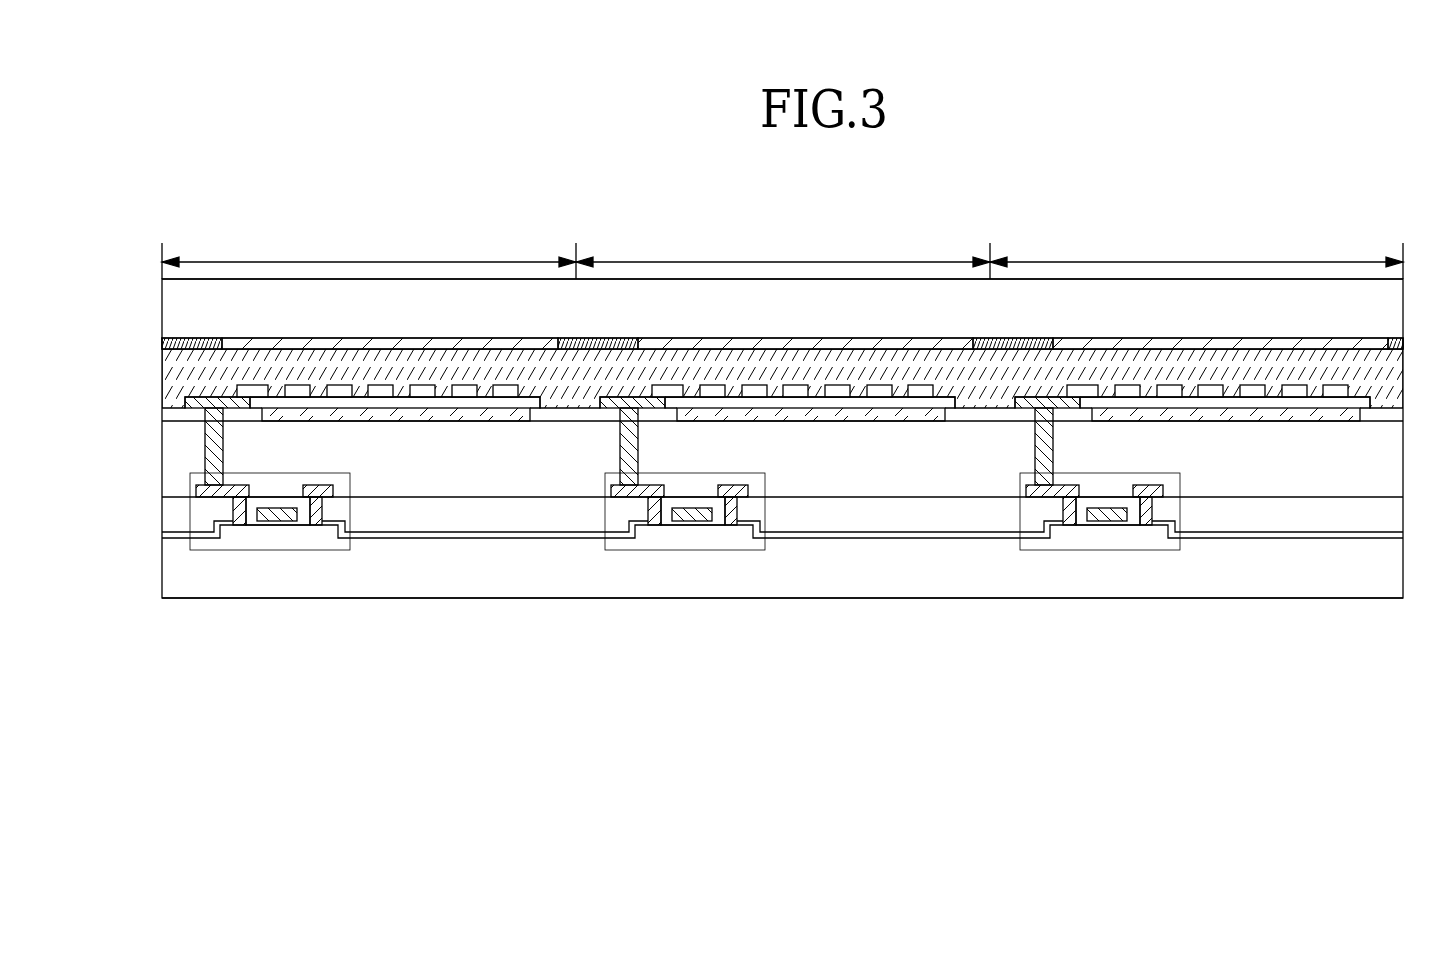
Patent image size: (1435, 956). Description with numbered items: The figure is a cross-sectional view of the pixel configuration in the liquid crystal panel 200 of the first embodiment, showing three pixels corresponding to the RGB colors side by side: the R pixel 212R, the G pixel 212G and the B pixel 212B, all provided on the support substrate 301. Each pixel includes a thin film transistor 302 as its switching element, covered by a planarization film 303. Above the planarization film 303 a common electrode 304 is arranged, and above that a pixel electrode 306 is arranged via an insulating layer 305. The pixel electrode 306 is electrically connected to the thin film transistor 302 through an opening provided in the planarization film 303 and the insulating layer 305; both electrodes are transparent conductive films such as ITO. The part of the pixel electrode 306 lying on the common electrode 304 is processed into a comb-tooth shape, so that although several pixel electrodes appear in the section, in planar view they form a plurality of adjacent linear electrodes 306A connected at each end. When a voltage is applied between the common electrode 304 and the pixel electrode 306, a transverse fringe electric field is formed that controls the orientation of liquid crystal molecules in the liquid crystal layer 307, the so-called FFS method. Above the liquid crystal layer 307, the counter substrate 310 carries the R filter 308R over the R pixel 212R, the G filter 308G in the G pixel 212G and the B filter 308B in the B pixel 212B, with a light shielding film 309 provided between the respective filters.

The liquid crystal panel 200 is at (1282, 198).
The R pixel 212R is at (369, 253).
The G pixel 212G is at (783, 253).
The B pixel 212B is at (1196, 253).
The support substrate 301 is at (216, 592).
The thin film transistor 302 is at (350, 515).
The planarization film 303 is at (173, 452).
The common electrode 304 is at (466, 415).
The insulating layer 305 is at (565, 413).
The pixel electrode 306 is at (213, 445).
The linear electrodes 306A is at (468, 383).
The liquid crystal layer 307 is at (162, 378).
The R filter 308R is at (290, 338).
The G filter 308G is at (732, 338).
The B filter 308B is at (1110, 338).
The light shielding film 309 is at (162, 341).
The counter substrate 310 is at (167, 292).